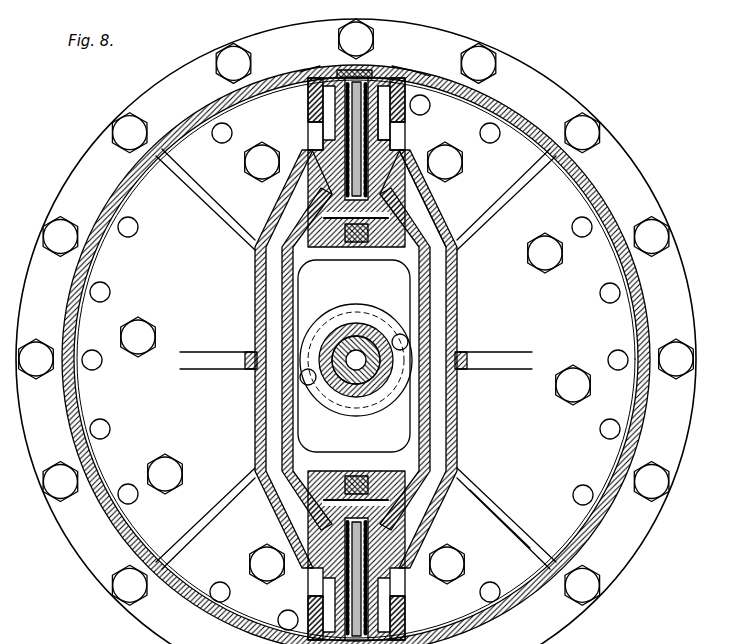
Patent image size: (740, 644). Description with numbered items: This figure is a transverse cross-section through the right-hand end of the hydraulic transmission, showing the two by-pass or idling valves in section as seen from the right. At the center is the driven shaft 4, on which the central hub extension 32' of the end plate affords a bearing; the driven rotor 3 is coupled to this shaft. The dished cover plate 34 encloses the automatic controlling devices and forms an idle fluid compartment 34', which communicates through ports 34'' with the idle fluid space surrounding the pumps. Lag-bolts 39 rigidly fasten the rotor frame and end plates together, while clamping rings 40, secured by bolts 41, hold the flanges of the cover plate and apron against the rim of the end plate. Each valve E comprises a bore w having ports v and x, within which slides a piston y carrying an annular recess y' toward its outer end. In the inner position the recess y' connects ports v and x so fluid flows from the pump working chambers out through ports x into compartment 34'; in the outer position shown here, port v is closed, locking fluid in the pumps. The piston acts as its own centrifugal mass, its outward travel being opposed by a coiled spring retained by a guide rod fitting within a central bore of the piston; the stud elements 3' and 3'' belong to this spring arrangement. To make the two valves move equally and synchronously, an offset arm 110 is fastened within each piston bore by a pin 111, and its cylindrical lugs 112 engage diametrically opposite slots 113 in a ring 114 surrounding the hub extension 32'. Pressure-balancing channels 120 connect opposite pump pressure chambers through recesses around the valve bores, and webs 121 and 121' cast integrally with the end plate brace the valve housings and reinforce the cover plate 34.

The driven rotor 3 is at (373, 339).
The stud plate 3' is at (343, 59).
The stud cap 3'' is at (295, 56).
The bore w is at (422, 75).
The valve E is at (352, 359).
The port x is at (312, 134).
The piston y is at (427, 198).
The annular recess y' is at (406, 113).
The by-pass port v is at (318, 178).
The driven shaft 4 is at (365, 403).
The central hub extension 32' is at (354, 356).
The dished cover plate 34 is at (356, 354).
The idle fluid compartment 34' is at (420, 348).
The ports 34'' is at (190, 423).
The lag-bolts 39 is at (166, 464).
The clamping rings 40 is at (356, 331).
The bolts 41 is at (655, 252).
The offset arm 110 is at (362, 252).
The pin 111 is at (332, 246).
The cylindrical lugs 112 is at (394, 338).
The slots 113 is at (318, 325).
The ring 114 is at (403, 363).
The pressure-balancing channels 120 is at (447, 216).
The webs 121 is at (356, 359).
The rib 121' is at (489, 519).